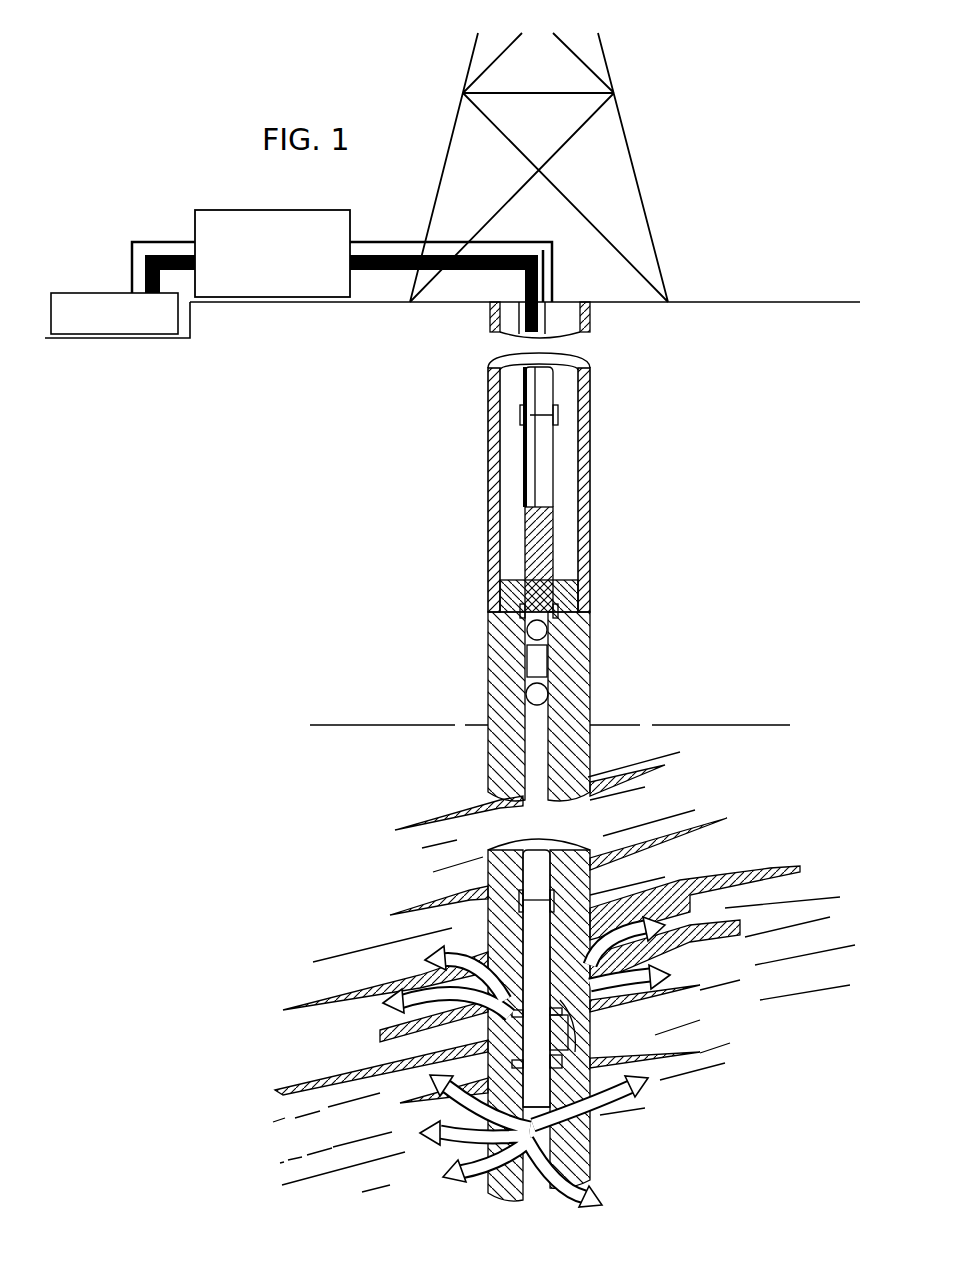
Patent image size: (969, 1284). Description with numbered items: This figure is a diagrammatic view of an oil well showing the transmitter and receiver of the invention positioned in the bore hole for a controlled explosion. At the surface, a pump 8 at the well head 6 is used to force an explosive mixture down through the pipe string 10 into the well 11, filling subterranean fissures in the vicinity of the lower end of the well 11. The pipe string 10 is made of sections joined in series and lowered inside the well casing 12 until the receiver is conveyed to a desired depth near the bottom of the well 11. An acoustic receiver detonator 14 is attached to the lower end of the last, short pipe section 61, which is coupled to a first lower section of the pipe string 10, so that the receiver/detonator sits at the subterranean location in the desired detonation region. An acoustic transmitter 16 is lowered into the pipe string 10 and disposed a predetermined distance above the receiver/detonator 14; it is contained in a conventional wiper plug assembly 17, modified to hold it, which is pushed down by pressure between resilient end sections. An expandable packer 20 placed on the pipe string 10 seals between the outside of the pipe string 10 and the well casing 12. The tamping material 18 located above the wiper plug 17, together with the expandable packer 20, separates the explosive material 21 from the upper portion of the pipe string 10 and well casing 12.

The well head 6 is at (548, 217).
The pump 8 is at (278, 211).
The pipe string 10 is at (553, 446).
The well 11 is at (488, 637).
The well casing 12 is at (488, 476).
The acoustic receiver detonator 14 is at (572, 1037).
The acoustic transmitter 16 is at (547, 663).
The wiper plug assembly 17 is at (526, 697).
The tamping material 18 is at (553, 517).
The expandable packer 20 is at (583, 590).
The explosive material 21 is at (530, 1131).
The last section of pipe string 61 is at (523, 936).